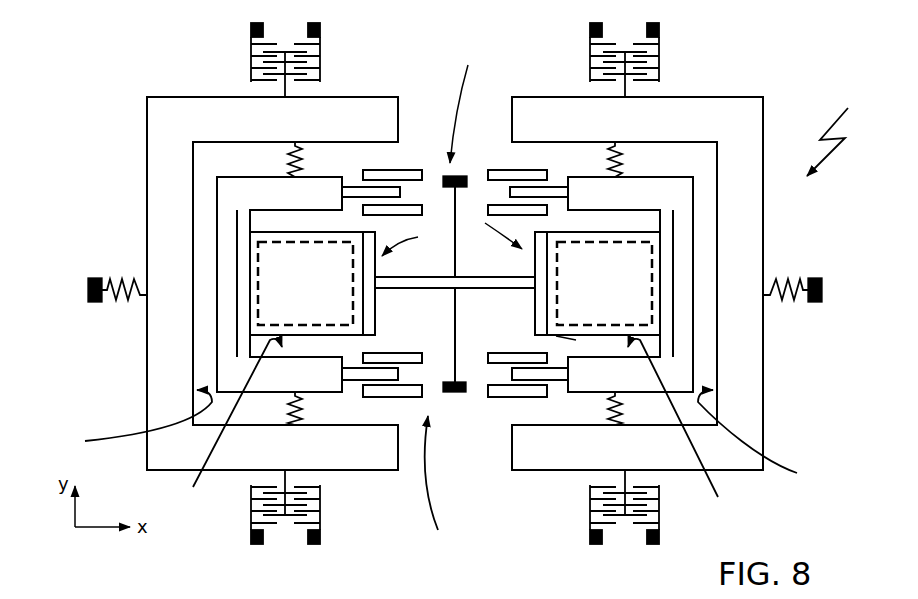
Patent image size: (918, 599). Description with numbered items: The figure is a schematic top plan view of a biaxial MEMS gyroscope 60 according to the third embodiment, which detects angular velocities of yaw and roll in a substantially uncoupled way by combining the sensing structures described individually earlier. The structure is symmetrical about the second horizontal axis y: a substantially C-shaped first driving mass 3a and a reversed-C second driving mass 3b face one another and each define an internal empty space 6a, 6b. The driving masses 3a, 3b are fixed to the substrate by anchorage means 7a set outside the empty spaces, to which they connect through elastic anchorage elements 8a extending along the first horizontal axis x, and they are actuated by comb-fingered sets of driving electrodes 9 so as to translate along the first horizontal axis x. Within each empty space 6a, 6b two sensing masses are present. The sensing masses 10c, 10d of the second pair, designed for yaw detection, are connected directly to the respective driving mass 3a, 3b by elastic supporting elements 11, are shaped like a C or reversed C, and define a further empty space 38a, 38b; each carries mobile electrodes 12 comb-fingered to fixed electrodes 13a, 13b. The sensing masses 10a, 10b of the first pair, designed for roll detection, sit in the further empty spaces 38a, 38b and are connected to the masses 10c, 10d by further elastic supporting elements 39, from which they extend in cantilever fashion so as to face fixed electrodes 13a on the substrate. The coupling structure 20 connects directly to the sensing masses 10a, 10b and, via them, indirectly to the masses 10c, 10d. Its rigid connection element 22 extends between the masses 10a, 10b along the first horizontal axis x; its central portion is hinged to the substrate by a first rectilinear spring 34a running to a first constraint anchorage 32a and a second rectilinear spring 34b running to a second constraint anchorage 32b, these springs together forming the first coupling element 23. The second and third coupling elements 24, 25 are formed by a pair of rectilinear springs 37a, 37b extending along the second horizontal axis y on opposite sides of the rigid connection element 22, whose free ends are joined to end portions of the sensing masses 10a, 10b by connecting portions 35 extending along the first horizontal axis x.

The first driving mass 3a is at (177, 120).
The second driving mass 3b is at (727, 113).
The empty space 6a is at (137, 421).
The empty space 6b is at (760, 441).
The anchorage means 7a is at (87, 290).
The elastic anchorage elements 8a is at (125, 293).
The driving electrodes 9 is at (336, 61).
The first sensing mass 10a is at (258, 232).
The second sensing mass 10b is at (583, 233).
The sensing mass of the second pair 10c is at (223, 198).
The sensing mass of the second pair 10d is at (695, 165).
The elastic supporting elements 11 is at (302, 152).
The mobile electrodes 12 is at (348, 185).
The first fixed electrodes 13a is at (421, 170).
The second fixed electrodes 13b is at (383, 212).
The coupling structure 20 is at (439, 486).
The rigid connection element 22 is at (398, 284).
The first coupling element 23 is at (466, 103).
The second coupling element 24 is at (412, 235).
The third coupling element 25 is at (489, 225).
The first constraint anchorage 32a is at (465, 177).
The second constraint anchorage 32b is at (452, 392).
The first rectilinear spring 34a is at (455, 237).
The second rectilinear spring 34b is at (453, 333).
The connecting portions 35 is at (579, 344).
The rectilinear spring 37a is at (375, 270).
The rectilinear spring 37b is at (377, 312).
The further empty space 38a is at (225, 428).
The further empty space 38b is at (684, 430).
The further elastic supporting elements 39 is at (245, 228).
The MEMS gyroscope 60 is at (841, 131).